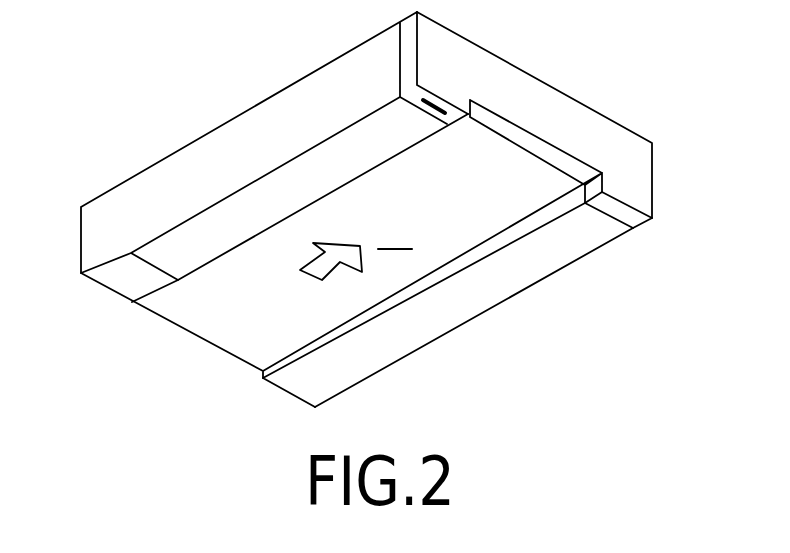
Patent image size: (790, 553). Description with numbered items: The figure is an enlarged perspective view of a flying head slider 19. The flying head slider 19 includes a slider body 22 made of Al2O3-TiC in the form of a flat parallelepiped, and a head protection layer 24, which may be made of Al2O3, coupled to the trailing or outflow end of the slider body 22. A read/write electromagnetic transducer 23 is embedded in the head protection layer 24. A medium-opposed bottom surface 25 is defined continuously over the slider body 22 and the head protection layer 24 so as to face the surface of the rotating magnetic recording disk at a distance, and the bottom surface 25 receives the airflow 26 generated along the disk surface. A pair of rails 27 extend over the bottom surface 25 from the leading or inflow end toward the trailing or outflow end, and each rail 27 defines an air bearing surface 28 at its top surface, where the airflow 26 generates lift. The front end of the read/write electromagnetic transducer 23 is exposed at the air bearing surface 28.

The flying head slider 19 is at (287, 78).
The slider body 22 is at (620, 235).
The read/write electromagnetic transducer 23 is at (433, 102).
The head protection layer 24 is at (653, 157).
The bottom surface 25 is at (391, 229).
The airflow 26 is at (309, 277).
The rail 27 is at (224, 256).
The air bearing surface 28 is at (405, 143).